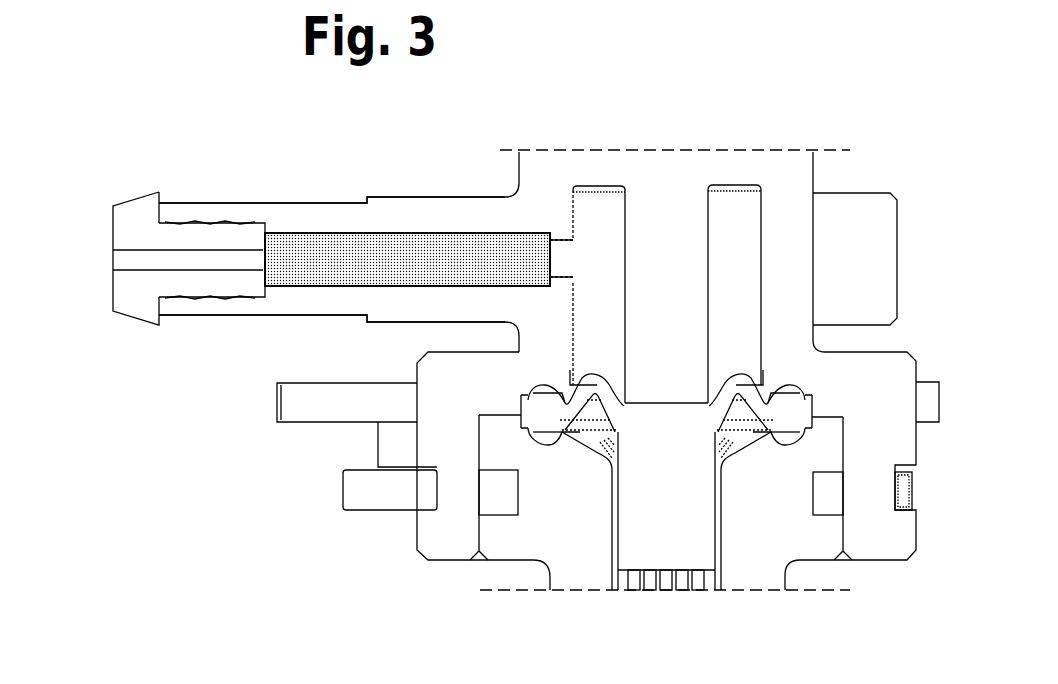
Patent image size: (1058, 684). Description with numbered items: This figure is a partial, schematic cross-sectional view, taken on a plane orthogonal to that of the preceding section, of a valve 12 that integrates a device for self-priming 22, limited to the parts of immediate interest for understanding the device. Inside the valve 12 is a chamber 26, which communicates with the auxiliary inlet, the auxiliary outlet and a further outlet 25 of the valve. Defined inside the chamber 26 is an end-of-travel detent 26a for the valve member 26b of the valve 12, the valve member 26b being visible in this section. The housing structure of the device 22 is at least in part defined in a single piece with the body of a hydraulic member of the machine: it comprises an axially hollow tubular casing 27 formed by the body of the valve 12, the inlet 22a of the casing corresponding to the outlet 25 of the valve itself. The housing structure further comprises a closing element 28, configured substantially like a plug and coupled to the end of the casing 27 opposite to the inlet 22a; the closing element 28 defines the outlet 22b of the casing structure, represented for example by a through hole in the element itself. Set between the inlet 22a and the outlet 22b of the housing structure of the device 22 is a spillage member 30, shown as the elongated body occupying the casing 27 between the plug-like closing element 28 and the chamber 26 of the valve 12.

The valve 12 is at (275, 500).
The device for self-priming 22 is at (300, 168).
The inlet 22a is at (560, 243).
The outlet 22b is at (157, 251).
The further outlet 25 is at (560, 243).
The chamber 26 is at (760, 262).
The end-of-travel detent 26a is at (688, 252).
The valve member 26b is at (716, 531).
The tubular casing 27 is at (433, 206).
The closing element 28 is at (133, 310).
The spillage member 30 is at (312, 270).